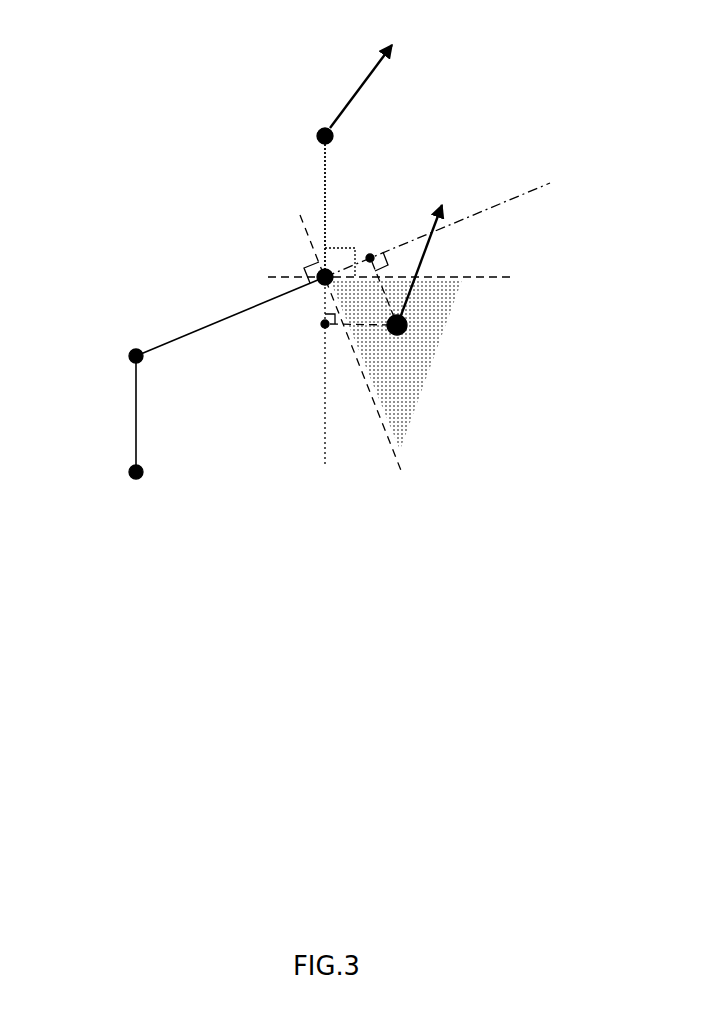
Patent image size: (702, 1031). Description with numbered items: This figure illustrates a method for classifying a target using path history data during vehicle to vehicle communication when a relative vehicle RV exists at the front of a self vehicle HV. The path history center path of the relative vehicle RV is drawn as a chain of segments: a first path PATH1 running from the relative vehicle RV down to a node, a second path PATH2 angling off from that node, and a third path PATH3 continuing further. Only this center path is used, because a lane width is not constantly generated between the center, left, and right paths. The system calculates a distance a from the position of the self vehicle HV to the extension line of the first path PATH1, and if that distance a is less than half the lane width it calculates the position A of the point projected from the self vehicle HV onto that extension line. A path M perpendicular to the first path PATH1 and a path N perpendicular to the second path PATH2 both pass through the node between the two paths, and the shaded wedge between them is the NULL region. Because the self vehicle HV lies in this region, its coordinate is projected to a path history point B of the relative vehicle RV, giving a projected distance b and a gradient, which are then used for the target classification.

The first path PATH1 is at (325, 172).
The second path PATH2 is at (191, 332).
The third path PATH3 is at (135, 414).
The relative vehicle RV is at (345, 134).
The self vehicle HV is at (414, 322).
The path perpendicular to the first path M is at (381, 269).
The path perpendicular to the second path N is at (351, 330).
The position of a point projected from the self vehicle A is at (317, 325).
The projected point B is at (373, 245).
The distance from the self vehicle to the extension line of the first path a is at (361, 334).
The projected distance b is at (386, 289).